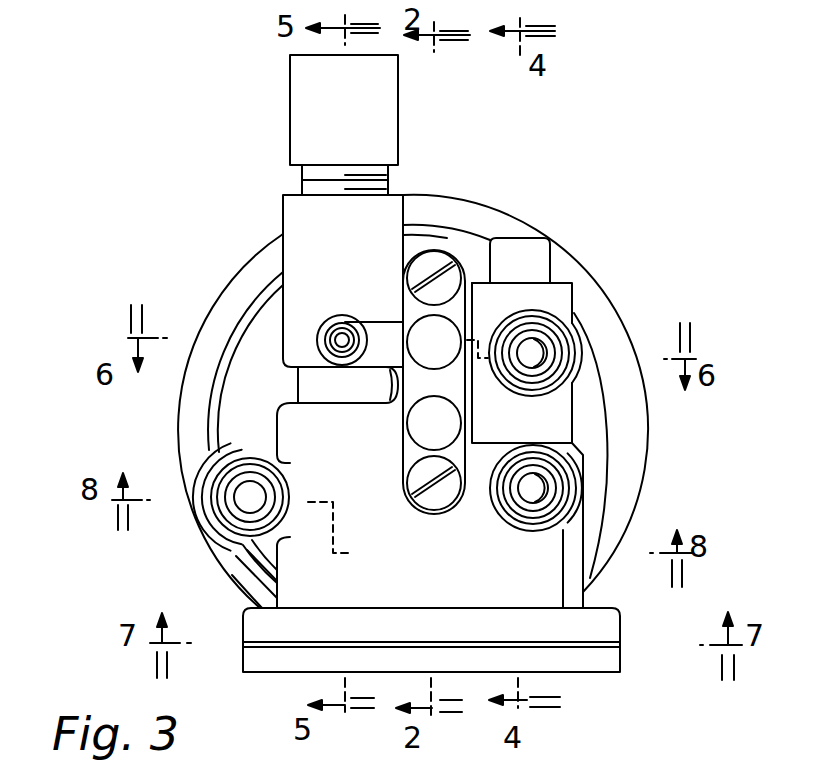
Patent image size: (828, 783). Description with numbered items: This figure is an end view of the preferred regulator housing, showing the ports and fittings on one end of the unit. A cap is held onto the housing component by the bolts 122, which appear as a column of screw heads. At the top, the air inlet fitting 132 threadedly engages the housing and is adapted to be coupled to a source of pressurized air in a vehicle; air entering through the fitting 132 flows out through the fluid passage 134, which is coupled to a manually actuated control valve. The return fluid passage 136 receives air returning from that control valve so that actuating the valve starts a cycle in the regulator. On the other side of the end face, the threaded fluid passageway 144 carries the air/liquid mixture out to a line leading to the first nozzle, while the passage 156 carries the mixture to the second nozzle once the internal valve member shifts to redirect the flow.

The bolts 122 is at (432, 275).
The air inlet fitting 132 is at (302, 104).
The fluid passage 134 is at (343, 338).
The return fluid passage 136 is at (250, 492).
The fluid passageway 144 is at (548, 353).
The passage 156 is at (547, 492).